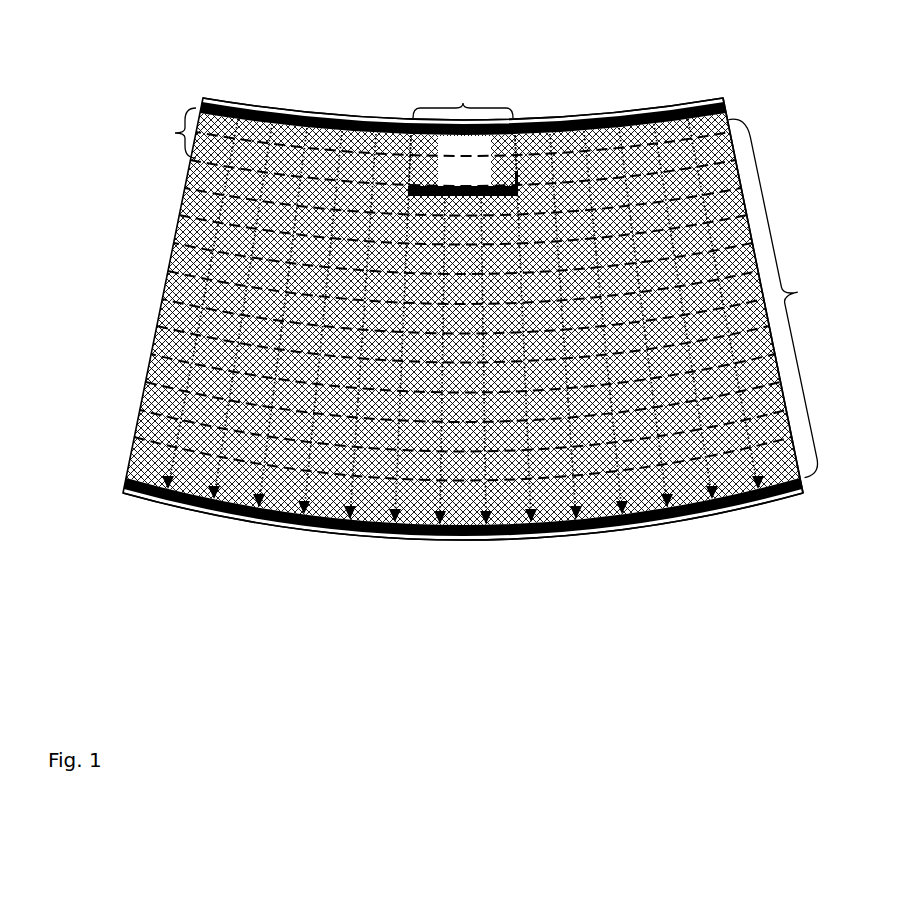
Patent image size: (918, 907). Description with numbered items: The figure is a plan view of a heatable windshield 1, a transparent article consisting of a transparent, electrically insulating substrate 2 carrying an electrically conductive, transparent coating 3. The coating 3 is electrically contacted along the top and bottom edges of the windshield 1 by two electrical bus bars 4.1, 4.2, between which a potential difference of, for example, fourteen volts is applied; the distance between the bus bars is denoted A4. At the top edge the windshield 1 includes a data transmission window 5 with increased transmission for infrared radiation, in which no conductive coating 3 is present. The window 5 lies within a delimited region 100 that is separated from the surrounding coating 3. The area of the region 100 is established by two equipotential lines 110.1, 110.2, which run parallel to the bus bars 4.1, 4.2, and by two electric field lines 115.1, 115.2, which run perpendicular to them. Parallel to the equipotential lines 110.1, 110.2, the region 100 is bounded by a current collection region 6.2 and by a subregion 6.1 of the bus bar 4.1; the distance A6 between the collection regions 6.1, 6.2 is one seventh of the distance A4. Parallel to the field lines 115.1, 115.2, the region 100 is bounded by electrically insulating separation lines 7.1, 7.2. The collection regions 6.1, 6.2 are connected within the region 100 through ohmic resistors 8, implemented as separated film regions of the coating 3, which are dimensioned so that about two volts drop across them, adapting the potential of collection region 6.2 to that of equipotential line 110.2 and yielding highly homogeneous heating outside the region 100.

The windshield 1 is at (152, 300).
The transparent, electrically insulating substrate 2 is at (235, 511).
The electrically conductive, transparent coating 3 is at (200, 187).
The bus bar 4.1 is at (195, 92).
The bus bar 4.2 is at (125, 478).
The data transmission window 5 is at (455, 96).
The collection region 6.1 is at (457, 142).
The collection region 6.2 is at (540, 125).
The electrically insulating separation line 7.1 is at (400, 140).
The electrically insulating separation line 7.2 is at (510, 172).
The ohmic resistor 8 is at (412, 133).
The delimited region 100 is at (395, 157).
The equipotential line 110.1 is at (720, 101).
The equipotential line 110.2 is at (730, 143).
The electric field line 115.1 is at (381, 484).
The electric field line 115.2 is at (518, 489).
The distance between the bus bars A4 is at (790, 295).
The distance between the collection regions A6 is at (154, 133).